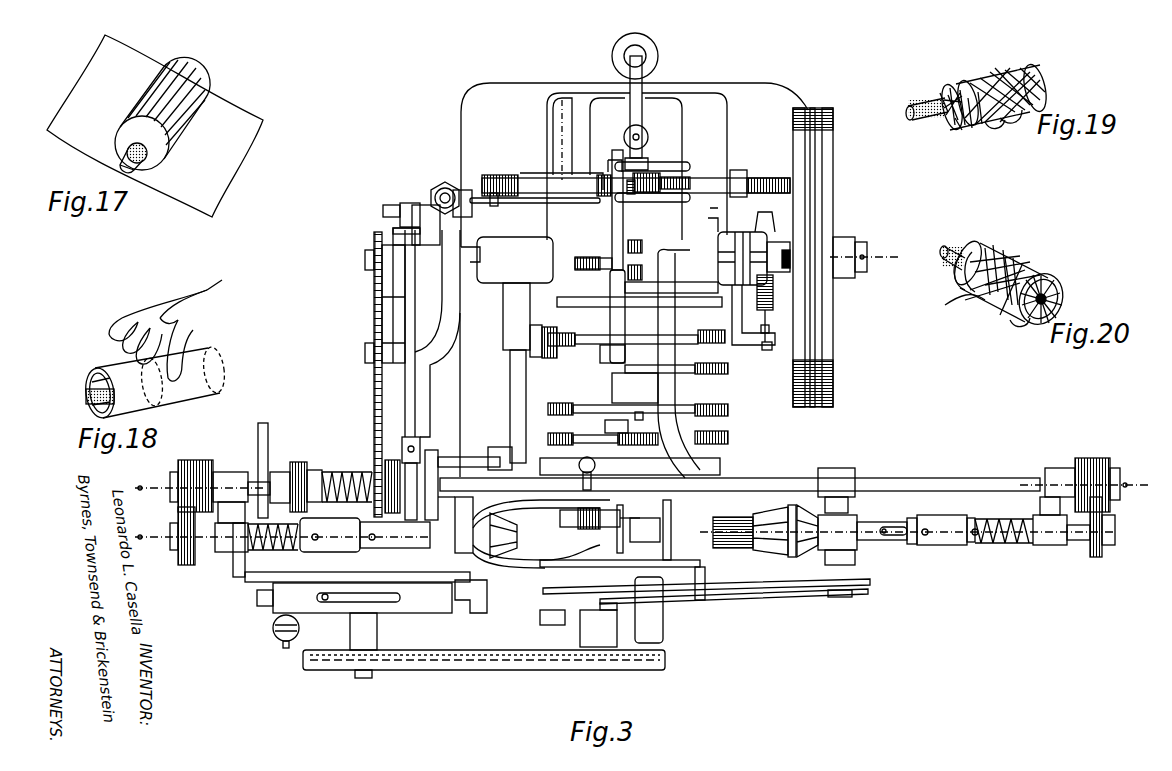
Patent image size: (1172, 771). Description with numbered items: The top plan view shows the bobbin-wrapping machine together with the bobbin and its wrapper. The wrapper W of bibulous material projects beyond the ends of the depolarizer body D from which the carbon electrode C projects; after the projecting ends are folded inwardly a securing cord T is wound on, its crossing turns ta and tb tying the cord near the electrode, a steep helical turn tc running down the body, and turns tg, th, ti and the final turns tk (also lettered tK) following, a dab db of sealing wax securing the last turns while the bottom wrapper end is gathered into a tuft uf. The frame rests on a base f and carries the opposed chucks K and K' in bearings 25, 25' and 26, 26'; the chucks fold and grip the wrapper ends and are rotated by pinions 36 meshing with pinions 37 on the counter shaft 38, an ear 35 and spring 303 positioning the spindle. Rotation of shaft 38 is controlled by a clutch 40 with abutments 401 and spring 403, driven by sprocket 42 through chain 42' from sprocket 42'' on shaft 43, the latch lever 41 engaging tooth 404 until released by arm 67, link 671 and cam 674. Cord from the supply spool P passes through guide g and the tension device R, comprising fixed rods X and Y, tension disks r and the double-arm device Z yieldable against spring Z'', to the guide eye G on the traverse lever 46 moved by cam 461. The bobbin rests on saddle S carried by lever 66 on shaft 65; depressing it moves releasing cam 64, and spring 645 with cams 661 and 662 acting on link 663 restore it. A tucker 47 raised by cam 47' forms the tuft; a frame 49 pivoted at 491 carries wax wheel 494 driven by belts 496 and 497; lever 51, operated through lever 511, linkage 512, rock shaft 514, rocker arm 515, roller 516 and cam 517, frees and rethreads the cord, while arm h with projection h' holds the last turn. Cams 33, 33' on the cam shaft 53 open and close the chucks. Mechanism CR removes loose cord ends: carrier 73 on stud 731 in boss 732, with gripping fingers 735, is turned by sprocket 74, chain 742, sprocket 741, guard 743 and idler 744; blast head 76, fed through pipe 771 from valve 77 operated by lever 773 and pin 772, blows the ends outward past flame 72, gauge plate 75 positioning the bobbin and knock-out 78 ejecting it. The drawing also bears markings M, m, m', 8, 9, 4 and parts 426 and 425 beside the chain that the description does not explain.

In FIG. 17, the wrapper W is at (240, 113).
In FIG. 18, the wrapper W is at (210, 370).
In FIG. 20, the wrapper W is at (1012, 272).
In FIG. 17, the depolarizer body D is at (170, 130).
In FIG. 18, the depolarizer body D is at (105, 390).
In FIG. 17, the carbon electrode C is at (145, 158).
In FIG. 18, the carbon electrode C is at (92, 400).
In FIG. 19, the carbon electrode C is at (915, 118).
In FIG. 20, the carbon electrode C is at (949, 248).
In FIG. 19, the securing cord T is at (1040, 95).
In FIG. 20, the securing cord T is at (1000, 258).
In FIG. 19, the cord turn ta is at (945, 95).
In FIG. 19, the cord turn tb is at (957, 130).
In FIG. 19, the steep helical turn tc is at (985, 92).
In FIG. 20, the steep helical turn tc is at (1032, 270).
In FIG. 19, the cord turn tg is at (1010, 75).
In FIG. 20, the cord turn tg is at (992, 305).
In FIG. 19, the cord turn th is at (1030, 76).
In FIG. 20, the cord turn th is at (1006, 312).
In FIG. 19, the cord turns ti is at (1012, 120).
In FIG. 20, the cord turns ti is at (965, 300).
In FIG. 20, the cord turns tk is at (994, 255).
In FIG. 19, the thread turn tK is at (972, 128).
In FIG. 19, the dab of sealing wax db is at (964, 88).
In FIG. 20, the dab of sealing wax db is at (958, 275).
In FIG. 20, the tuft uf is at (1055, 302).
In FIG. 3, the base f is at (742, 87).
In FIG. 3, the motor M is at (568, 127).
In FIG. 3, the supply spool P is at (655, 47).
In FIG. 3, the guide g is at (643, 117).
In FIG. 3, the tension disks r is at (612, 172).
In FIG. 3, the fixed rod X is at (687, 162).
In FIG. 3, the fixed rod Y is at (685, 198).
In FIG. 3, the tension device R is at (636, 230).
In FIG. 3, the double arm tension device Z is at (650, 260).
In FIG. 3, the spring Z'' is at (544, 260).
In FIG. 3, the pulley m is at (819, 242).
In FIG. 3, the pulley flange m' is at (842, 257).
In FIG. 3, the shaft 8 is at (352, 262).
In FIG. 3, the shaft 43 is at (867, 257).
In FIG. 3, the releasing cam 64 is at (770, 225).
In FIG. 3, the spring 645 is at (775, 302).
In FIG. 3, the valve 77 is at (430, 190).
In FIG. 3, the cam 461 is at (488, 178).
In FIG. 3, the pin 772 is at (497, 205).
In FIG. 3, the lever 773 is at (478, 210).
In FIG. 3, the sprocket 42'' is at (353, 359).
In FIG. 3, the chain 42' is at (362, 304).
In FIG. 3, the guide plate 426 is at (398, 318).
In FIG. 3, the bolt 425 is at (374, 355).
In FIG. 3, the supporting shaft 65 is at (438, 263).
In FIG. 3, the latch lever 41 is at (415, 430).
In FIG. 3, the tooth 404 is at (410, 515).
In FIG. 3, the rock shaft 514 is at (513, 390).
In FIG. 3, the rocker arm 515 is at (532, 352).
In FIG. 3, the roller 516 is at (552, 320).
In FIG. 3, the arm 67 is at (612, 305).
In FIG. 3, the lever 66 is at (668, 282).
In FIG. 3, the cam 517 is at (726, 340).
In FIG. 3, the link 671 is at (605, 352).
In FIG. 3, the cam 674 is at (685, 375).
In FIG. 3, the cam 661 is at (728, 412).
In FIG. 3, the cam 662 is at (728, 437).
In FIG. 3, the link 663 is at (605, 427).
In FIG. 3, the operating lever 511 is at (468, 457).
In FIG. 3, the adjustable linkage 512 is at (500, 447).
In FIG. 3, the bearing 26 is at (643, 468).
In FIG. 3, the bearing 26' is at (641, 470).
In FIG. 3, the counter shaft 38 is at (885, 478).
In FIG. 3, the cam 33 is at (643, 607).
In FIG. 3, the cam 33' is at (720, 466).
In FIG. 3, the shaft 9 is at (642, 487).
In FIG. 3, the pinions 37 is at (195, 460).
In FIG. 3, the pipe 771 is at (258, 430).
In FIG. 3, the abutments 401 is at (295, 462).
In FIG. 3, the adjustable helical spring 403 is at (312, 470).
In FIG. 3, the clutch mechanism 40 is at (340, 473).
In FIG. 3, the sprocket 42 is at (364, 434).
In FIG. 3, the shaft 4 is at (625, 540).
In FIG. 3, the pinion 36 is at (185, 565).
In FIG. 3, the blast head 76 is at (245, 562).
In FIG. 3, the gauge plate 75 is at (385, 578).
In FIG. 3, the bobbin carrier 73 is at (273, 592).
In FIG. 3, the spring gripping fingers 735 is at (402, 597).
In FIG. 3, the boss 732 is at (378, 632).
In FIG. 3, the flame 72 is at (273, 630).
In FIG. 3, the cord end removing mechanism CR is at (318, 632).
In FIG. 3, the stud 731 is at (365, 678).
In FIG. 3, the sprocket 74 is at (652, 665).
In FIG. 3, the sprocket 741 is at (415, 665).
In FIG. 3, the chain 742 is at (468, 665).
In FIG. 3, the guard 743 is at (512, 665).
In FIG. 3, the idler sprocket 744 is at (560, 665).
In FIG. 3, the cam shaft 53 is at (670, 655).
In FIG. 3, the knock-out device 78 is at (487, 603).
In FIG. 3, the projection h' is at (453, 525).
In FIG. 3, the rockable arm h is at (503, 550).
In FIG. 3, the lever 51 is at (502, 510).
In FIG. 3, the chuck K is at (536, 566).
In FIG. 3, the chuck K' is at (633, 587).
In FIG. 3, the cord guide G is at (583, 478).
In FIG. 3, the traverse lever 46 is at (612, 470).
In FIG. 3, the applying wheel 494 is at (620, 555).
In FIG. 3, the saddle S is at (645, 518).
In FIG. 3, the tucker 47 is at (680, 530).
In FIG. 3, the cam 47' is at (639, 610).
In FIG. 3, the frame 49 is at (765, 584).
In FIG. 3, the belt 496 is at (755, 596).
In FIG. 3, the belt 497 is at (800, 593).
In FIG. 3, the pivot 491 is at (855, 596).
In FIG. 3, the bearing 25 is at (800, 539).
In FIG. 3, the ear 35 is at (945, 548).
In FIG. 3, the spring 303 is at (1005, 548).
In FIG. 3, the bearing 25' is at (1061, 545).